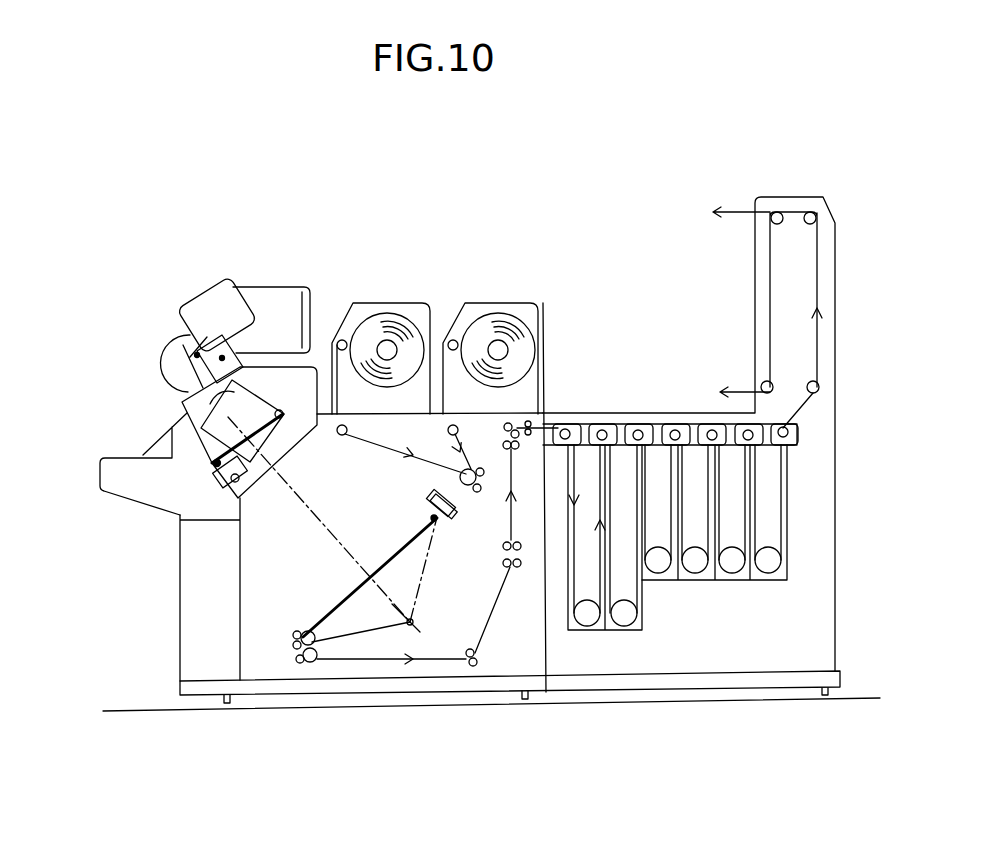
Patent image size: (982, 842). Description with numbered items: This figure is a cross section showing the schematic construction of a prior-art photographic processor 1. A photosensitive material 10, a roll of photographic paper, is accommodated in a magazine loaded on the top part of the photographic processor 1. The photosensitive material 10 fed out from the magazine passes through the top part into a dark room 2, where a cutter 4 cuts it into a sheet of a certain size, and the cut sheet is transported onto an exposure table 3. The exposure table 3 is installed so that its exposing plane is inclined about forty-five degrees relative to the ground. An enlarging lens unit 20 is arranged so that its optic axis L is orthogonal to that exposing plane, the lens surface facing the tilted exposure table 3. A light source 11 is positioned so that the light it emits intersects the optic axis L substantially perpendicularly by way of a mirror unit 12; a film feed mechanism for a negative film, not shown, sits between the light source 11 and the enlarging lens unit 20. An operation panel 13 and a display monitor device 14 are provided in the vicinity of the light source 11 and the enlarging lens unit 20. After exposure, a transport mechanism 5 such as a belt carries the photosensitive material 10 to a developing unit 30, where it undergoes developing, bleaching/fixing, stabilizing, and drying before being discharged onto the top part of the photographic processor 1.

The photographic processor 1 is at (581, 398).
The dark room 2 is at (512, 655).
The exposure table 3 is at (336, 613).
The cutter 4 is at (450, 515).
The transport mechanism 5 is at (440, 660).
The photosensitive material 10 is at (388, 323).
The light source 11 is at (215, 288).
The mirror unit 12 is at (182, 352).
The operation panel 13 is at (110, 455).
The display monitor device 14 is at (280, 303).
The enlarging lens unit 20 is at (207, 420).
The developing unit 30 is at (638, 653).
The optic axis of lens L is at (330, 533).